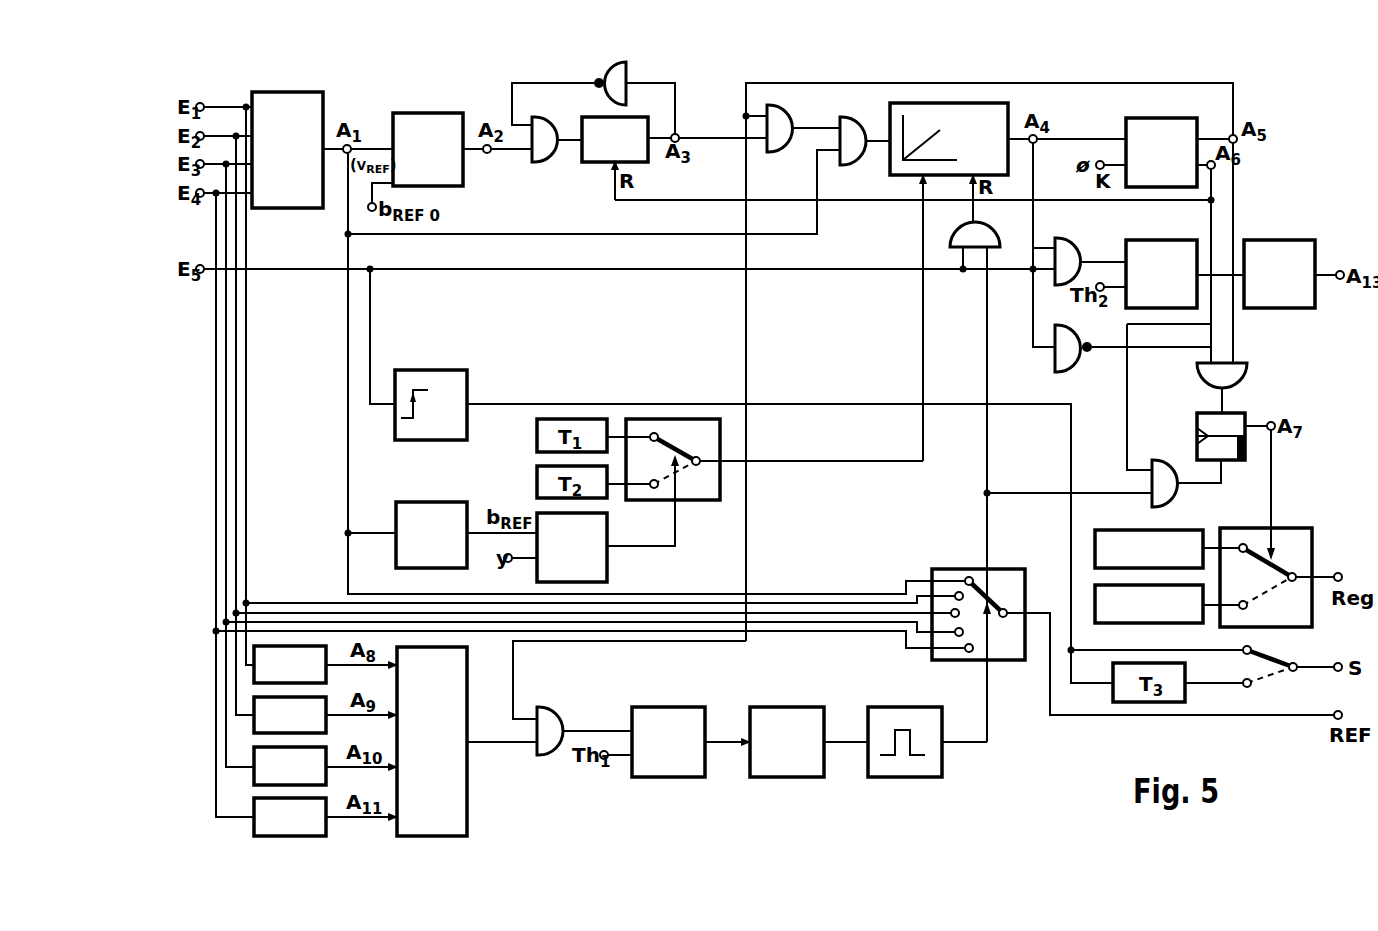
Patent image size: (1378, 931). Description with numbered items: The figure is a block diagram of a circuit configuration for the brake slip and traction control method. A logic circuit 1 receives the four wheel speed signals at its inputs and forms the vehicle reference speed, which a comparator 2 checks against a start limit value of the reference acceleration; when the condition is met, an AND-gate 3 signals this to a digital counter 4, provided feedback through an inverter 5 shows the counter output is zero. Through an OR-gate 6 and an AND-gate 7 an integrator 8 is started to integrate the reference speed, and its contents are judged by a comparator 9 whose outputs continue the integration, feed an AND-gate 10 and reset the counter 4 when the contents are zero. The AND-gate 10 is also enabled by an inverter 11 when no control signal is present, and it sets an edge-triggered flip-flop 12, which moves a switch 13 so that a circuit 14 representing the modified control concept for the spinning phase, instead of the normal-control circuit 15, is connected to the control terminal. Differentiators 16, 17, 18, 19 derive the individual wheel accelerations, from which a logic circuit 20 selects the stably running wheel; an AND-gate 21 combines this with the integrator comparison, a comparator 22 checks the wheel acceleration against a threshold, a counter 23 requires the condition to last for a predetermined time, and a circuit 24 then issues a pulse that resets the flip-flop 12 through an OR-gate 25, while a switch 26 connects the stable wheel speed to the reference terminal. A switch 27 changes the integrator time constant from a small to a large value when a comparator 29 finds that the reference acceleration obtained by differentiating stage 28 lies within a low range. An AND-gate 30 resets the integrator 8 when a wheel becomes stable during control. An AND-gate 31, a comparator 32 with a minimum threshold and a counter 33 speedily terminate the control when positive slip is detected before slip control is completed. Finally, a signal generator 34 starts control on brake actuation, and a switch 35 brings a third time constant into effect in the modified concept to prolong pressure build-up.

The logic circuit 1 is at (285, 104).
The comparator 2 is at (423, 123).
The AND-gate 3 is at (541, 163).
The digital counter 4 is at (596, 164).
The inverter 5 is at (631, 73).
The OR-gate 6 is at (784, 154).
The AND-gate 7 is at (857, 167).
The integrator 8 is at (892, 112).
The comparator 9 is at (1138, 122).
The AND-gate 10 is at (1249, 372).
The inverter 11 is at (1049, 366).
The edge-triggered flip-flop 12 is at (1197, 425).
The switch 13 is at (1300, 532).
The circuit 14 is at (1117, 623).
The circuit 15 is at (1121, 530).
The differentiator 16 is at (279, 680).
The differentiator 17 is at (279, 730).
The differentiator 18 is at (279, 781).
The differentiator 19 is at (279, 832).
The logic circuit 20 is at (455, 808).
The AND-gate 21 is at (545, 758).
The comparator 22 is at (668, 772).
The counter 23 is at (785, 770).
The circuit 24 is at (903, 770).
The OR-gate 25 is at (1179, 490).
The switch 26 is at (964, 568).
The switch 27 is at (697, 497).
The stage 28 is at (430, 512).
The comparator 29 is at (600, 568).
The AND-gate 30 is at (990, 233).
The AND-gate 31 is at (1069, 242).
The comparator 32 is at (1154, 250).
The counter 33 is at (1278, 248).
The signal generator 34 is at (430, 378).
The switch 35 is at (1285, 662).